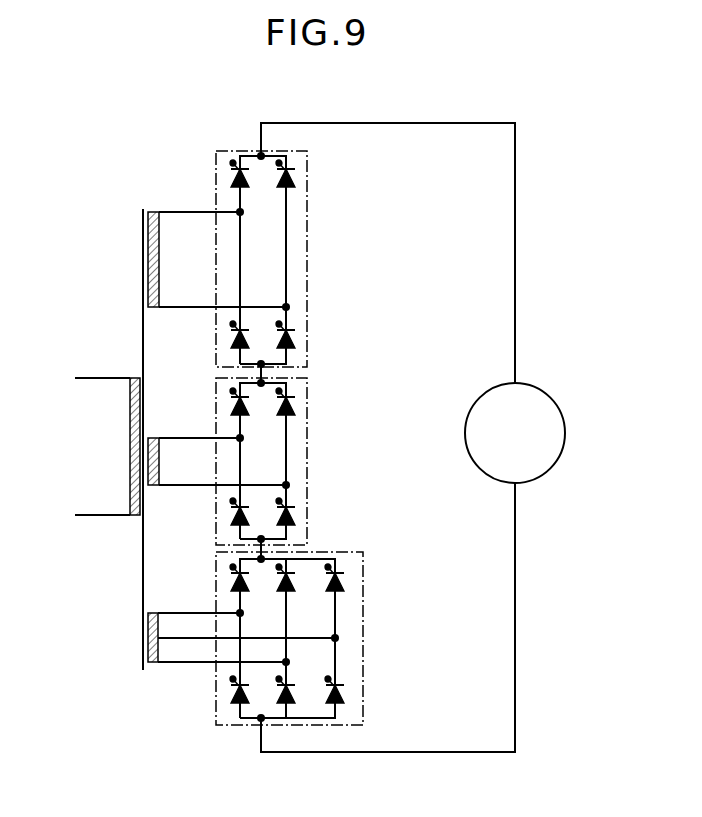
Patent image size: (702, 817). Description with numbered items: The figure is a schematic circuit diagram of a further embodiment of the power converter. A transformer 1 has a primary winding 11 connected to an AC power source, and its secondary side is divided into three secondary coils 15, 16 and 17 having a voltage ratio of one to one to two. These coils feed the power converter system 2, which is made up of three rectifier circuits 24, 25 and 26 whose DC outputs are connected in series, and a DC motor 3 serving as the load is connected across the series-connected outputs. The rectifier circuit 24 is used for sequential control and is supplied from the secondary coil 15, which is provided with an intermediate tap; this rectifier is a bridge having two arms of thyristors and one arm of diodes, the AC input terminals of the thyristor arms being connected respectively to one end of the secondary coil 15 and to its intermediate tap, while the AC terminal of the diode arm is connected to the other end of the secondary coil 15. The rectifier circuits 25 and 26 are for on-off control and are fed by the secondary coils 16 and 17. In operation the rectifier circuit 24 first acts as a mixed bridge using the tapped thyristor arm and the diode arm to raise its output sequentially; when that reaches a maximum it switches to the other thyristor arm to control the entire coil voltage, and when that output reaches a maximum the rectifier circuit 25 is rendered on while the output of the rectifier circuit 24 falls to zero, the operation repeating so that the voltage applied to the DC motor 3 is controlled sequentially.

The transformer 1 is at (152, 196).
The power converter system 2 is at (258, 113).
The DC motor 3 is at (526, 447).
The primary winding 11 is at (130, 448).
The secondary coil 15 is at (158, 613).
The secondary coil 16 is at (159, 445).
The secondary coil 17 is at (159, 246).
The rectifier circuit for sequential control 24 is at (364, 580).
The rectifier circuit for on-off control 25 is at (308, 410).
The rectifier circuit for on-off control 26 is at (308, 186).